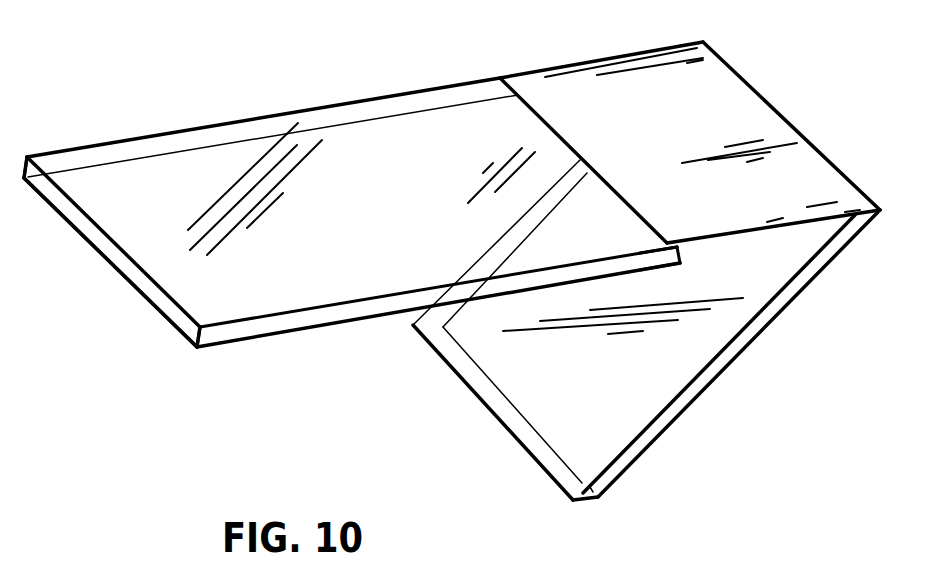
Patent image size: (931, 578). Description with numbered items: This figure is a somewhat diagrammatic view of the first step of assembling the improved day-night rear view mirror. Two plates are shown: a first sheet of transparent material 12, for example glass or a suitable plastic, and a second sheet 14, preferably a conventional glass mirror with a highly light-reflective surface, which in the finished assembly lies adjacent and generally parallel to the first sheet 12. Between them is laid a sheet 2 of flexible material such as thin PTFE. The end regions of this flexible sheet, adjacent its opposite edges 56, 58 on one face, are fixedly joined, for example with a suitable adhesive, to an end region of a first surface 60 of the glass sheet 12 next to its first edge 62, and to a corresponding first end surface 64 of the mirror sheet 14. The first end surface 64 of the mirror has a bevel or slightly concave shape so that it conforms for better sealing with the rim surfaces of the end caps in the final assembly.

The cover plate 2 is at (738, 92).
The first sheet of transparent material 12 is at (234, 110).
The second sheet 14 is at (428, 359).
The opposite edge of the sheet of flexible material 56 is at (552, 140).
The opposite edge of the sheet of flexible material 58 is at (835, 158).
The first surface of the glass sheet 60 is at (125, 220).
The first edge 62 is at (683, 255).
The first end surface of the mirror sheet 64 is at (860, 218).